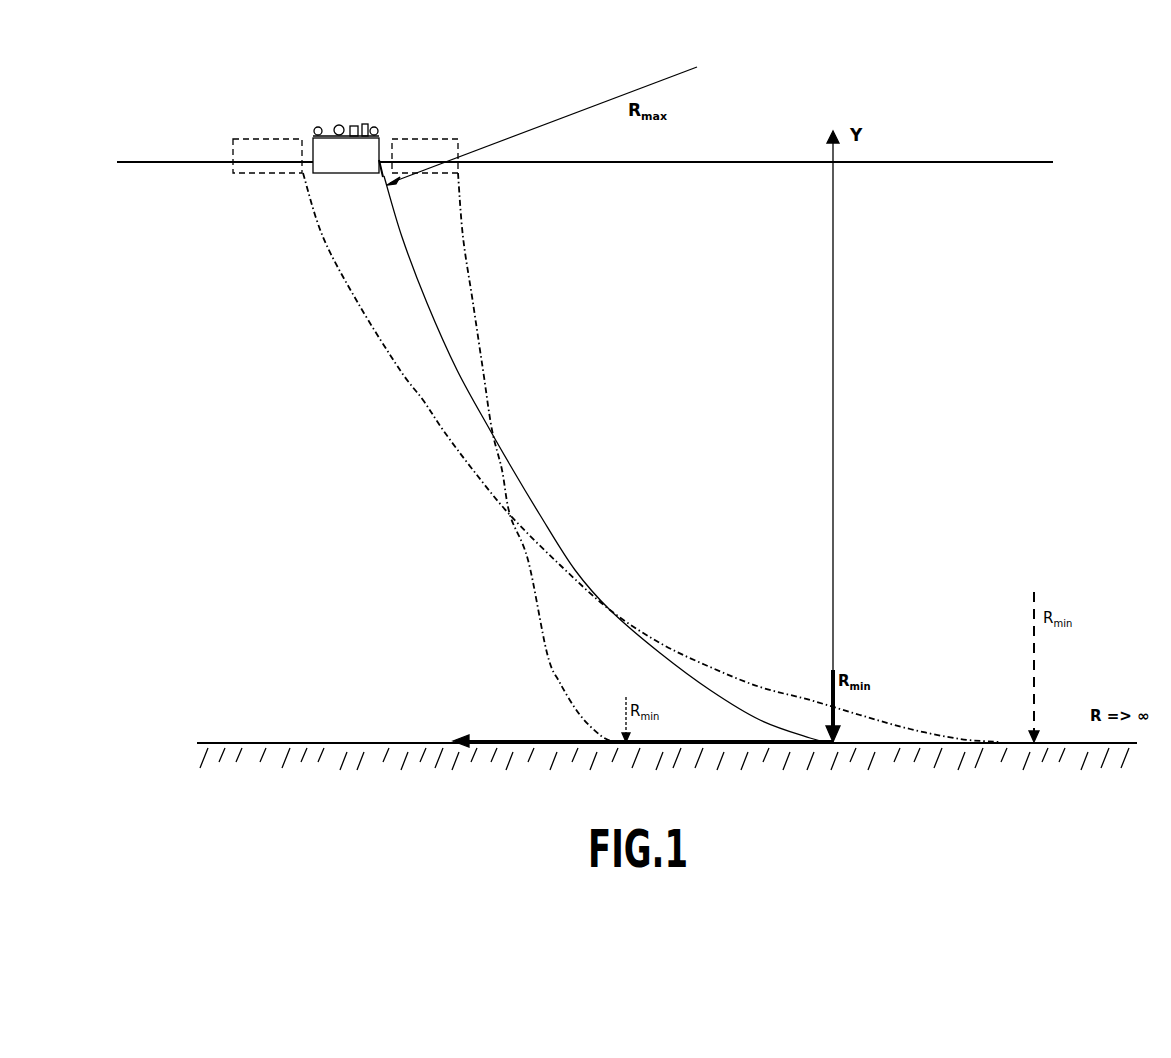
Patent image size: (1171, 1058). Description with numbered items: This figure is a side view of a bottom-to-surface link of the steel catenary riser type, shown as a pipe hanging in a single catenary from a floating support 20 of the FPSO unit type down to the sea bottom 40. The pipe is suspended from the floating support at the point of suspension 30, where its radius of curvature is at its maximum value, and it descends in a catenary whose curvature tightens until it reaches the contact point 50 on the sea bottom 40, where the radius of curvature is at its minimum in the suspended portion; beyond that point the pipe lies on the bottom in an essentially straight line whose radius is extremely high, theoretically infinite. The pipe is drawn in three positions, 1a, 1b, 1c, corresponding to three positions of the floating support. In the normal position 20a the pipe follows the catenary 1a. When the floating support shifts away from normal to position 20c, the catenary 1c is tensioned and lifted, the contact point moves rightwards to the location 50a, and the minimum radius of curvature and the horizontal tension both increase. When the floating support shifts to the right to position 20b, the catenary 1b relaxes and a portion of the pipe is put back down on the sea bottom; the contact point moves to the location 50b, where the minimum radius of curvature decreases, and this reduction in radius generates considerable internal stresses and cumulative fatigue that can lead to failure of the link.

The catenary pipe in normal position 1a is at (537, 515).
The relaxed catenary 1b is at (547, 647).
The tensioned catenary 1c is at (423, 402).
The floating support 20 is at (345, 97).
The normal position of floating support 20a is at (336, 148).
The shifted position of floating support 20b is at (421, 144).
The shifted position of floating support 20c is at (266, 155).
The point of suspension 30 is at (384, 177).
The sea bottom 40 is at (303, 747).
The contact point 50 is at (833, 746).
The contact point in tensioned configuration 50a is at (1036, 746).
The contact point with reduced radius of curvature 50b is at (620, 745).